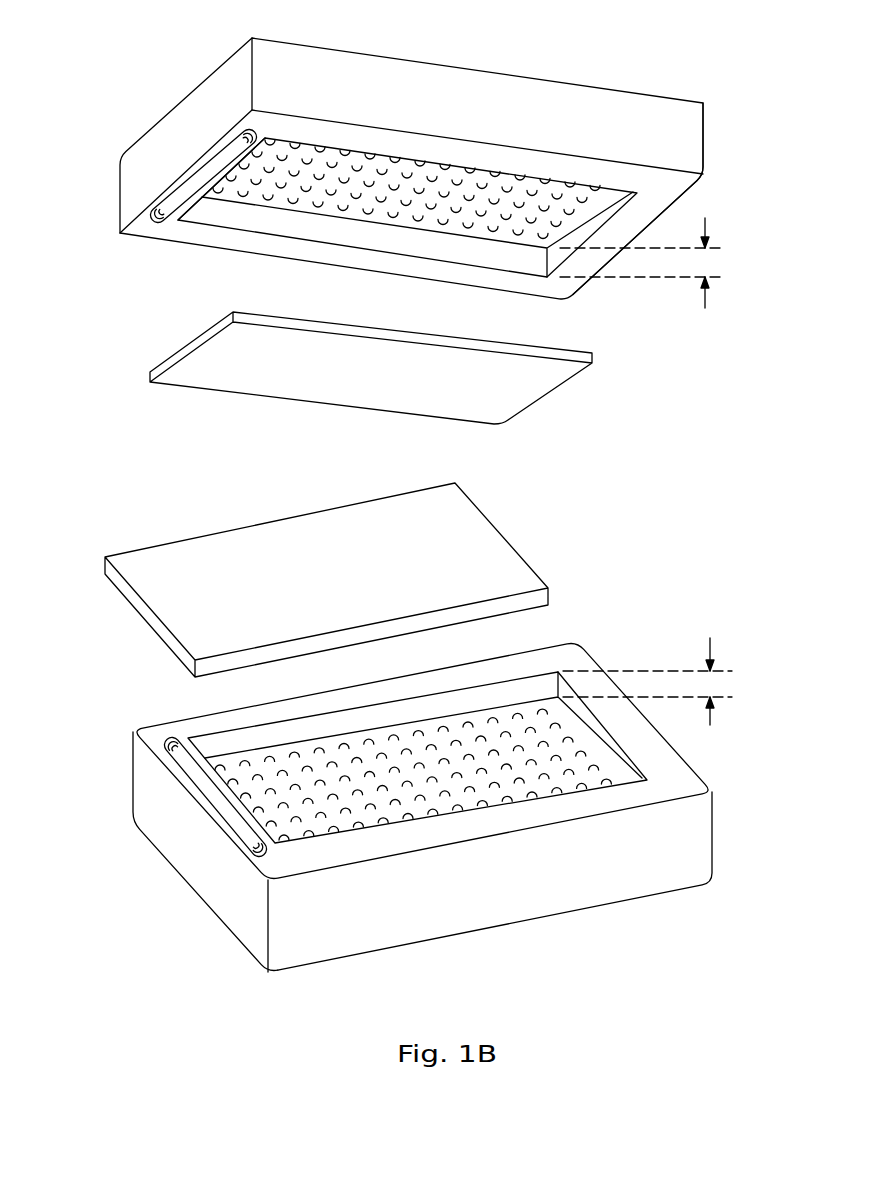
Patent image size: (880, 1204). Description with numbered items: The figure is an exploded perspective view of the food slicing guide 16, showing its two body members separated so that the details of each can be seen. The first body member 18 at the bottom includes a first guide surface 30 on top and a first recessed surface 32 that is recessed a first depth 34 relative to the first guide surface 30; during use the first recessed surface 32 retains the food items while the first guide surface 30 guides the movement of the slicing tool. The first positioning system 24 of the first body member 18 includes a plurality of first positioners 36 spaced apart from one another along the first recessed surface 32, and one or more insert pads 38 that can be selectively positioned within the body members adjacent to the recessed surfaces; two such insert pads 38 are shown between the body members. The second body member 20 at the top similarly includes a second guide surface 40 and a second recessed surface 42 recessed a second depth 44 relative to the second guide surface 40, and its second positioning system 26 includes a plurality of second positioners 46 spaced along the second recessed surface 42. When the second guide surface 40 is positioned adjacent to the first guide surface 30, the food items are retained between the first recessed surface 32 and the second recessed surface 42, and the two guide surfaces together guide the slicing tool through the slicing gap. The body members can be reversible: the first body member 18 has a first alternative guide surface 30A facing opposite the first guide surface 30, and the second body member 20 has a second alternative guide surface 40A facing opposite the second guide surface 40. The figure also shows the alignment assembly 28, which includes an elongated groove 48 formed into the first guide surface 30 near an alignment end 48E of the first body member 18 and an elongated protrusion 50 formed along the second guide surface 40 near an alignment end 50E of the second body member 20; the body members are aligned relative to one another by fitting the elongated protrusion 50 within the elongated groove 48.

The food slicing guide 16 is at (125, 917).
The first body member 18 is at (413, 797).
The second body member 20 is at (390, 175).
The first positioning system 24 is at (242, 765).
The second positioning system 26 is at (288, 202).
The alignment assembly 28 is at (183, 187).
The first guide surface 30 is at (562, 653).
The first alternative guide surface 30A is at (563, 918).
The first recessed surface 32 is at (610, 767).
The first depth 34 is at (647, 681).
The first positioners 36 is at (555, 789).
The insert pads 38 is at (318, 530).
The second guide surface 40 is at (653, 197).
The second alternative guide surface 40A is at (500, 73).
The second recessed surface 42 is at (477, 232).
The second depth 44 is at (641, 263).
The second positioners 46 is at (367, 217).
The elongated groove 48 is at (237, 827).
The alignment end 48E is at (228, 900).
The elongated protrusion 50 is at (172, 202).
The alignment end 50E is at (187, 130).